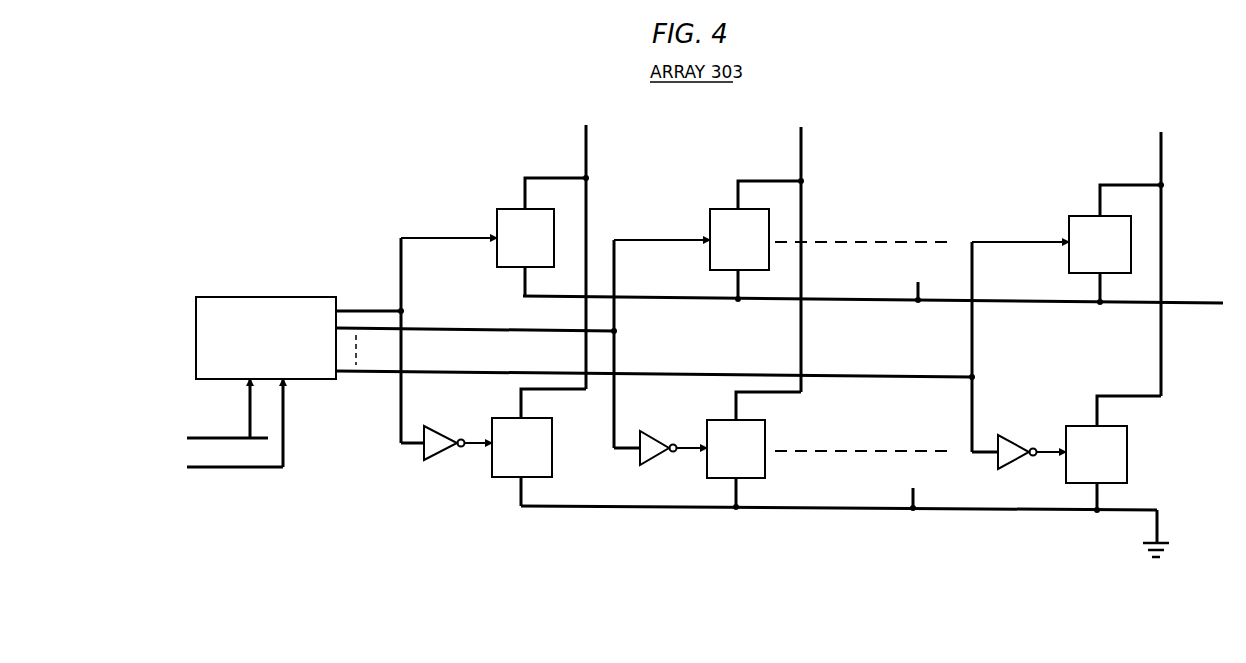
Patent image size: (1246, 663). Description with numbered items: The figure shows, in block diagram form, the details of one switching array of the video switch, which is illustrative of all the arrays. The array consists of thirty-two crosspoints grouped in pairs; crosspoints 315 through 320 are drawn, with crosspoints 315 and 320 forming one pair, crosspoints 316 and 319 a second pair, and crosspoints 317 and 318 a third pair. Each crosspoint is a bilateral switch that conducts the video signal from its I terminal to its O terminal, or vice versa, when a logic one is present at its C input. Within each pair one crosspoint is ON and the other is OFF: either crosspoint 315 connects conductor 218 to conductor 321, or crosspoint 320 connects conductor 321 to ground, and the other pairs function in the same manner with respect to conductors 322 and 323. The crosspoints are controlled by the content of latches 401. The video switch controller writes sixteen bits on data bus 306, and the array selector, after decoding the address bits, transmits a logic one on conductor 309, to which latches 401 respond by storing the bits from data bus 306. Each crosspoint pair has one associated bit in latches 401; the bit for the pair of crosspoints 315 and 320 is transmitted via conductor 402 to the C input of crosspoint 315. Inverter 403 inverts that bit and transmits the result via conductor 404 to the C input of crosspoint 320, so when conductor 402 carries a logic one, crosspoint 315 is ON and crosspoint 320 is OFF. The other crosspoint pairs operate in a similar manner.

The conductor 218 is at (1190, 301).
The data bus 306 is at (225, 435).
The conductor 309 is at (192, 470).
The crosspoint 315 is at (512, 207).
The crosspoint 316 is at (726, 208).
The crosspoint 317 is at (1083, 214).
The crosspoint 318 is at (1128, 446).
The crosspoint 319 is at (766, 438).
The crosspoint 320 is at (553, 436).
The conductor 321 is at (588, 156).
The conductor 322 is at (803, 158).
The conductor 323 is at (1163, 162).
The latches 401 is at (228, 296).
The conductor 402 is at (366, 305).
The inverter 403 is at (443, 430).
The conductor 404 is at (470, 450).